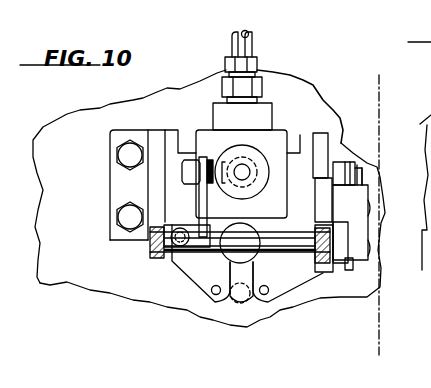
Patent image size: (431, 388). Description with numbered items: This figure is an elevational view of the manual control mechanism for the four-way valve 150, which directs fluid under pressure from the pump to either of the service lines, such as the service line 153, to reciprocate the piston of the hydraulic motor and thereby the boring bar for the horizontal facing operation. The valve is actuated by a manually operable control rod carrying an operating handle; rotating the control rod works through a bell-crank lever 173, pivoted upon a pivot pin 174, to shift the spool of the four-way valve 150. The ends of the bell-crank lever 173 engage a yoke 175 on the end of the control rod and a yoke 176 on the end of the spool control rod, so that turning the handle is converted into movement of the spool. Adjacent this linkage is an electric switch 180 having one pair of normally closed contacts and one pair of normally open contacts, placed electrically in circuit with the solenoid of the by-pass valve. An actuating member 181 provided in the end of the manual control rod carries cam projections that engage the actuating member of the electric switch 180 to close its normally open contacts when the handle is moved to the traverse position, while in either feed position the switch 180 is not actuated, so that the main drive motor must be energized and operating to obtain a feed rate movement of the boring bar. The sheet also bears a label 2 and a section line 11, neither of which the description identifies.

The nut block / mounting boss 2 is at (215, 114).
The 4-way valve 150 is at (278, 140).
The service line 153 is at (247, 35).
The bell-crank lever 173 is at (202, 201).
The pivot pin 174 is at (288, 248).
The yoke 175 is at (173, 268).
The yoke 176 is at (256, 190).
The electric switch 180 is at (380, 230).
The actuating member 181 is at (367, 268).
The section line 11- 11 is at (380, 83).